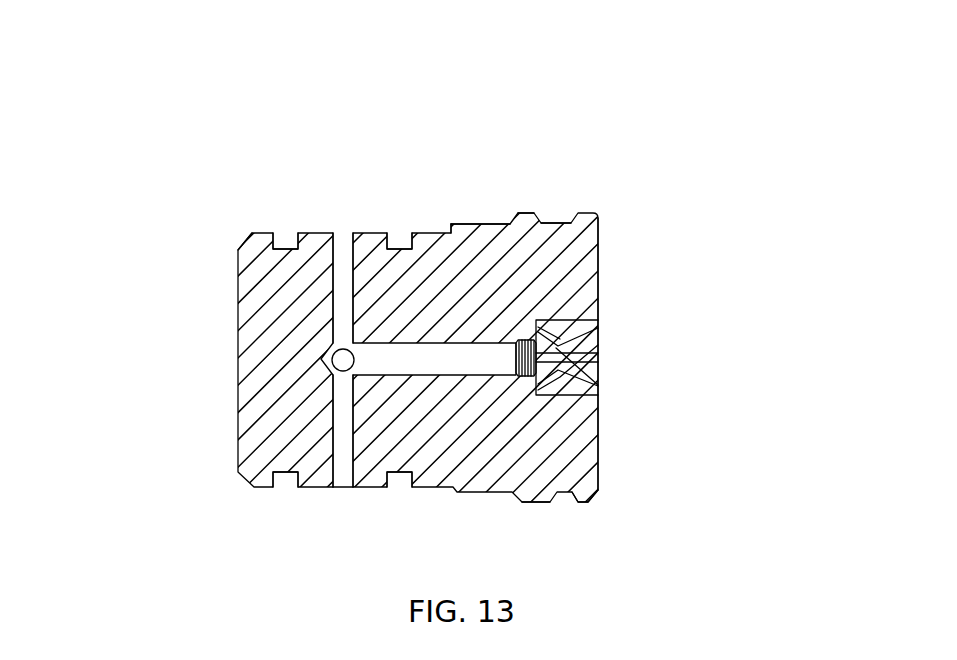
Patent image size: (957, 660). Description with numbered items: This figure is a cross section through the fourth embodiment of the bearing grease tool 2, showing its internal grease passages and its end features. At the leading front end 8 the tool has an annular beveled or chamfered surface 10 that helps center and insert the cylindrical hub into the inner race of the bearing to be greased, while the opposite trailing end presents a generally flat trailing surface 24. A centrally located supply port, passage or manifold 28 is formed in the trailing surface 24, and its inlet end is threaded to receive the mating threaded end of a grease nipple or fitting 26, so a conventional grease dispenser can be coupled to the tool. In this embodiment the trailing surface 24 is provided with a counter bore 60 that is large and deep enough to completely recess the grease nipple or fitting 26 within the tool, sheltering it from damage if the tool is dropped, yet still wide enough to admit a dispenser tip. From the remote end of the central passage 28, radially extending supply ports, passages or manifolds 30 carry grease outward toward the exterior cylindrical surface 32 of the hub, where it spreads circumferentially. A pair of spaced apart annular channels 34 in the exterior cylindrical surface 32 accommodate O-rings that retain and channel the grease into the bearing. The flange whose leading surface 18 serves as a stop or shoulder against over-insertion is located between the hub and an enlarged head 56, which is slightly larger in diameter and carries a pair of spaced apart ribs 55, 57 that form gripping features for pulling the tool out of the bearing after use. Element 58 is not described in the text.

The grease tool 2 is at (637, 272).
The leading front end 8 is at (234, 365).
The annular beveled or chamfered surface 10 is at (250, 243).
The leading surface 18 is at (452, 231).
The trailing surface 24 is at (600, 252).
The grease nipple or fitting 26 is at (578, 382).
The supply port, passage or manifold 28 is at (380, 365).
The radially extending supply port, passage or manifold 30 is at (347, 252).
The exterior cylindrical surface 32 is at (266, 490).
The annular channels 34 is at (288, 247).
The rib 55 is at (588, 502).
The enlarged head 56 is at (556, 222).
The rib 57 is at (535, 214).
The shoulder 58 is at (492, 224).
The counter bore 60 is at (580, 323).